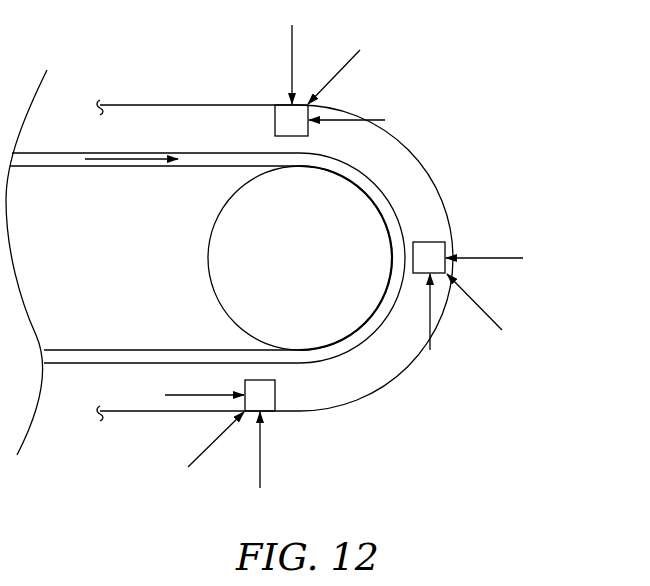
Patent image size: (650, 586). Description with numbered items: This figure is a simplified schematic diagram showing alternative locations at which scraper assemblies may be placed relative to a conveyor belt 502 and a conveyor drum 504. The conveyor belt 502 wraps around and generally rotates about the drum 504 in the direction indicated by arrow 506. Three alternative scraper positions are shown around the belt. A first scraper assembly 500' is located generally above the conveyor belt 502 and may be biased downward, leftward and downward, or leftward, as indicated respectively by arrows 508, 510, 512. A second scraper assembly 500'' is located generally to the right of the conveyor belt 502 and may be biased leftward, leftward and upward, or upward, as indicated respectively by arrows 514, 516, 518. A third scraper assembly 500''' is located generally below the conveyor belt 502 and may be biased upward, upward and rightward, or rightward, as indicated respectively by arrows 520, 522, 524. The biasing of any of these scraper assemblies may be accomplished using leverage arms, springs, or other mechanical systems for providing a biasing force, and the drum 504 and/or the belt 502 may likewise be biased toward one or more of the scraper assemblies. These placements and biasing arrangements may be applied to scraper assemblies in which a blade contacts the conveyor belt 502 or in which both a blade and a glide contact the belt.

The scraper assembly 500' is at (244, 102).
The scraper assembly 500'' is at (479, 242).
The scraper assembly 500''' is at (315, 414).
The conveyor belt 502 is at (378, 182).
The conveyor drum 504 is at (318, 274).
The arrow 506 is at (137, 163).
The arrow 508 is at (293, 50).
The arrow 510 is at (348, 64).
The arrow 512 is at (358, 119).
The arrow 514 is at (497, 258).
The arrow 516 is at (474, 302).
The arrow 518 is at (431, 320).
The arrow 520 is at (262, 465).
The arrow 522 is at (211, 450).
The arrow 524 is at (188, 396).